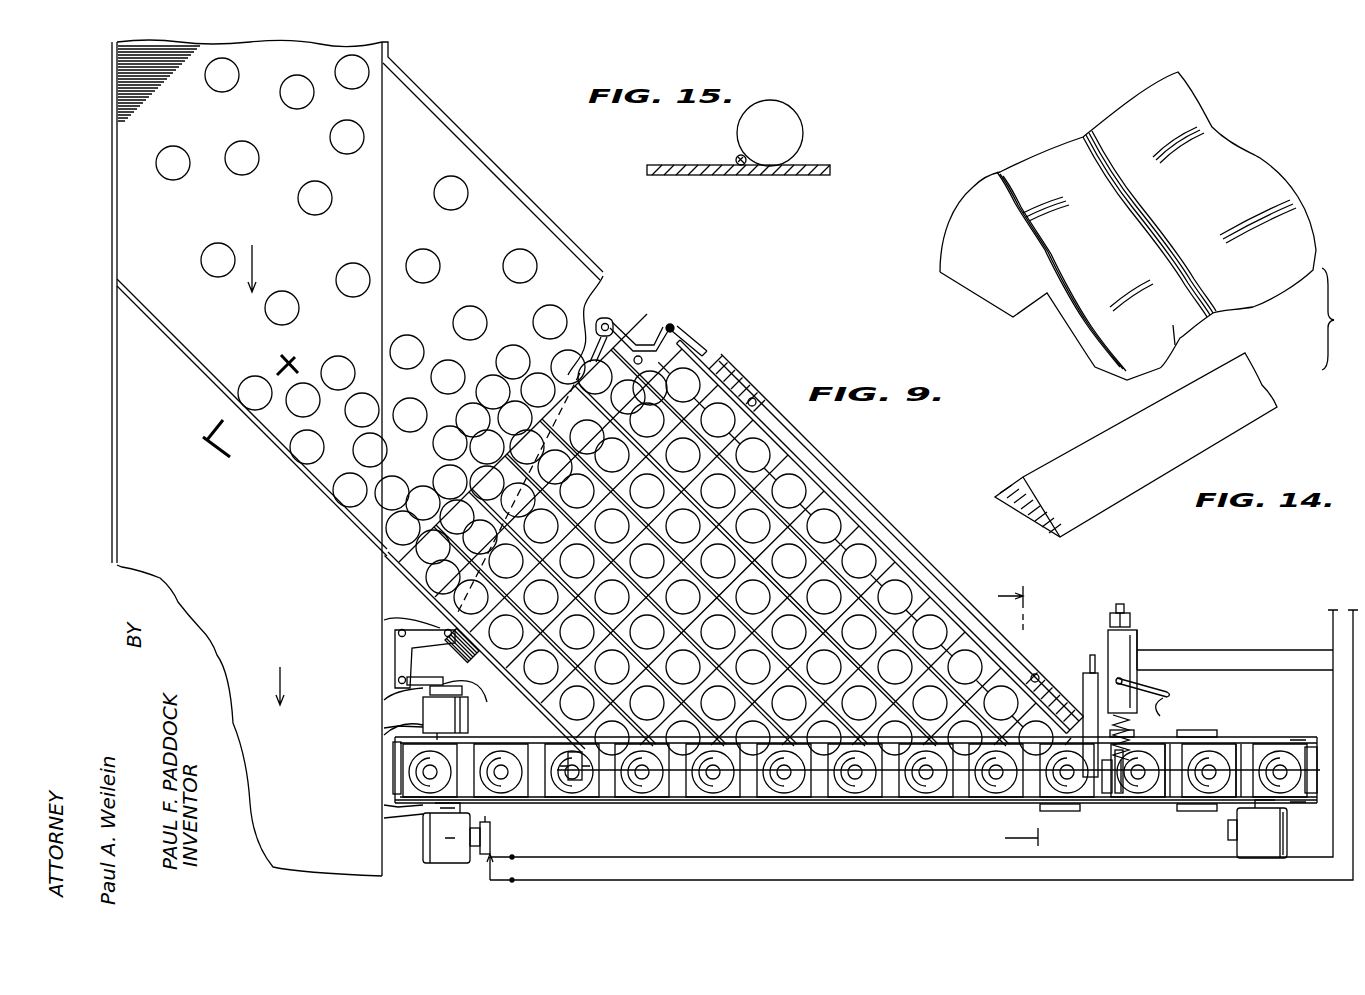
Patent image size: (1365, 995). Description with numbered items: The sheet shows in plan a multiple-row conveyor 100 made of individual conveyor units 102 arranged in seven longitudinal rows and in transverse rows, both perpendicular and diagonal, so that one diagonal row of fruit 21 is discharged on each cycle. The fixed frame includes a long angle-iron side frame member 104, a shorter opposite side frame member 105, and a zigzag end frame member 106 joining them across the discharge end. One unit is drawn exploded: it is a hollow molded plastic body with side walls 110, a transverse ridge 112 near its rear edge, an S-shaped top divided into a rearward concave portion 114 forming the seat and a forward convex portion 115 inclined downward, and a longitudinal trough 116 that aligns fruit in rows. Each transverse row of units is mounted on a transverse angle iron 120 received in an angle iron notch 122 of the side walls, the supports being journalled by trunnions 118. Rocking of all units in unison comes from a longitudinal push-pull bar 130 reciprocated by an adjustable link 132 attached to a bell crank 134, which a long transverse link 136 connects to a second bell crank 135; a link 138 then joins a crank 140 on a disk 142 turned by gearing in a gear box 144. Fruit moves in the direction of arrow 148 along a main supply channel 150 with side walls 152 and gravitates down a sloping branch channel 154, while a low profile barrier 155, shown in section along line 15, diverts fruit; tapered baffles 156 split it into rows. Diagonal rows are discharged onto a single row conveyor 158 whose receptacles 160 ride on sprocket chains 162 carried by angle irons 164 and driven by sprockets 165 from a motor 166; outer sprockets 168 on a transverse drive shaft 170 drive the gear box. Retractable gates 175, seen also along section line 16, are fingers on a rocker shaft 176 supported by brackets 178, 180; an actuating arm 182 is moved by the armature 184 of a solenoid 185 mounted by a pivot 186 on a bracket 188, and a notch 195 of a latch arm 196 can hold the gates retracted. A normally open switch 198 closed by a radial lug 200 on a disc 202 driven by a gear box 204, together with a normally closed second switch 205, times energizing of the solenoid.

In FIG. 9, the golf ball 21 is at (725, 430).
In FIG. 15, the golf ball 21 is at (790, 128).
In FIG. 9, the multiple-row conveyor 100 is at (880, 498).
In FIG. 9, the conveyor unit 102 is at (823, 483).
In FIG. 14, the conveyor unit 102 is at (1258, 155).
In FIG. 9, the side frame member 104 is at (837, 480).
In FIG. 9, the opposite side frame member 105 is at (557, 740).
In FIG. 9, the end frame member 106 is at (800, 770).
In FIG. 14, the side walls 110 is at (998, 298).
In FIG. 14, the transverse ridge 112 is at (1057, 140).
In FIG. 14, the rearward concave portion 114 is at (1213, 147).
In FIG. 14, the forward convex portion 115 is at (1273, 235).
In FIG. 14, the longitudinal trough 116 is at (1150, 225).
In FIG. 9, the trunnions 118 is at (890, 568).
In FIG. 14, the transverse angle iron 120 is at (1130, 485).
In FIG. 14, the angle iron notch 122 is at (1062, 325).
In FIG. 9, the push-pull bar 130 is at (708, 363).
In FIG. 9, the adjustable link 132 is at (688, 333).
In FIG. 9, the bell crank 134 is at (640, 337).
In FIG. 9, the second bell crank 135 is at (450, 632).
In FIG. 9, the transverse link 136 is at (600, 325).
In FIG. 9, the link 138 is at (420, 680).
In FIG. 9, the crank 140 is at (450, 676).
In FIG. 9, the disk 142 is at (430, 690).
In FIG. 9, the gear box 144 is at (423, 710).
In FIG. 9, the arrow 148 is at (253, 259).
In FIG. 9, the main supply channel 150 is at (268, 208).
In FIG. 15, the main supply channel 150 is at (774, 176).
In FIG. 9, the side walls 152 is at (390, 56).
In FIG. 9, the branch channel 154 is at (485, 277).
In FIG. 9, the low profile barrier 155 is at (195, 363).
In FIG. 15, the low profile barrier 155 is at (736, 158).
In FIG. 9, the tapered baffles 156 is at (470, 465).
In FIG. 9, the single row conveyor 158 is at (1250, 733).
In FIG. 9, the receptacles 160 is at (963, 790).
In FIG. 9, the sprocket chains 162 is at (1227, 740).
In FIG. 9, the angle irons 164 is at (1205, 730).
In FIG. 9, the sprockets 165 is at (1268, 740).
In FIG. 9, the motor 166 is at (1268, 845).
In FIG. 9, the sprockets 168 is at (400, 726).
In FIG. 9, the transverse drive shaft 170 is at (430, 814).
In FIG. 9, the gates 175 is at (753, 770).
In FIG. 9, the rocker shaft 176 is at (870, 780).
In FIG. 9, the bracket 178 is at (1090, 696).
In FIG. 9, the bracket 180 is at (580, 777).
In FIG. 9, the actuating arm 182 is at (1107, 795).
In FIG. 9, the armature 184 is at (1120, 792).
In FIG. 9, the solenoid 185 is at (1110, 655).
In FIG. 9, the pivot 186 is at (1133, 624).
In FIG. 9, the bracket 188 is at (1118, 615).
In FIG. 9, the notch 195 is at (1179, 711).
In FIG. 9, the latch arm 196 is at (1167, 680).
In FIG. 9, the switch 198 is at (490, 862).
In FIG. 9, the radial lug 200 is at (495, 823).
In FIG. 9, the disc 202 is at (485, 853).
In FIG. 9, the gear box 204 is at (433, 852).
In FIG. 9, the second switch 205 is at (1217, 650).
In FIG. 9, the section line 15— 15 is at (260, 413).
In FIG. 9, the section line 16- 16 is at (999, 706).